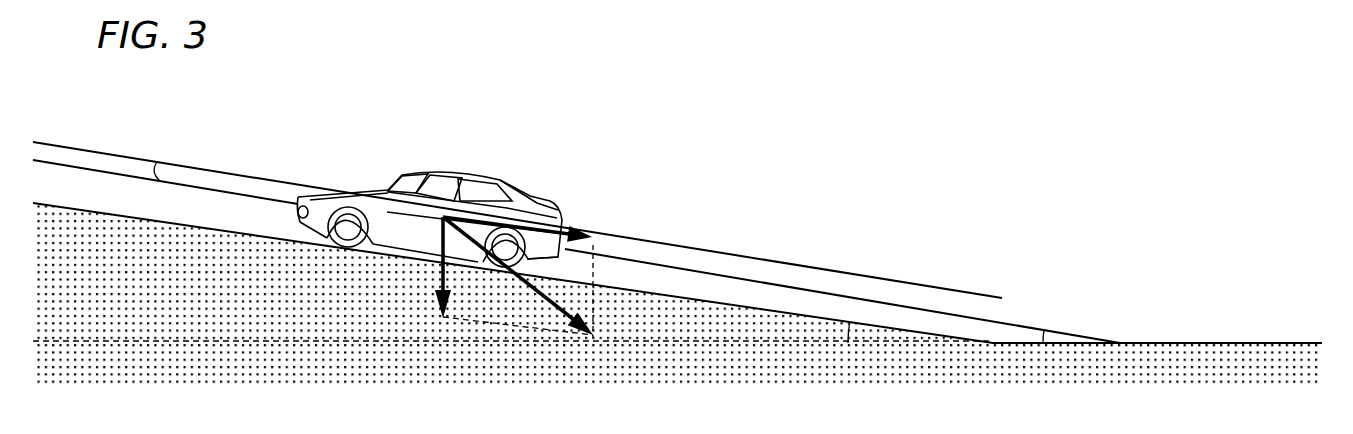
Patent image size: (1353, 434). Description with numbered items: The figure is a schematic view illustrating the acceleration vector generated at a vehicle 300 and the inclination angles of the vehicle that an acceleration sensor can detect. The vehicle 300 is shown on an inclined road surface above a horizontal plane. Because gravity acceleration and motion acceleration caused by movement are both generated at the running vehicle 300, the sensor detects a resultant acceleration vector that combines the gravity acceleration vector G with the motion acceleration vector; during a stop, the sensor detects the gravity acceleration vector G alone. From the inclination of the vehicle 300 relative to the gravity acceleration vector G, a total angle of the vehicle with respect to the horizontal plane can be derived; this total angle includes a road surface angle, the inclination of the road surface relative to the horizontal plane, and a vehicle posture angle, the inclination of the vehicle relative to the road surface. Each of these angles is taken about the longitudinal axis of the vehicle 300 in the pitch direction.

The vehicle 300 is at (522, 188).
The gravity acceleration vector G is at (432, 265).